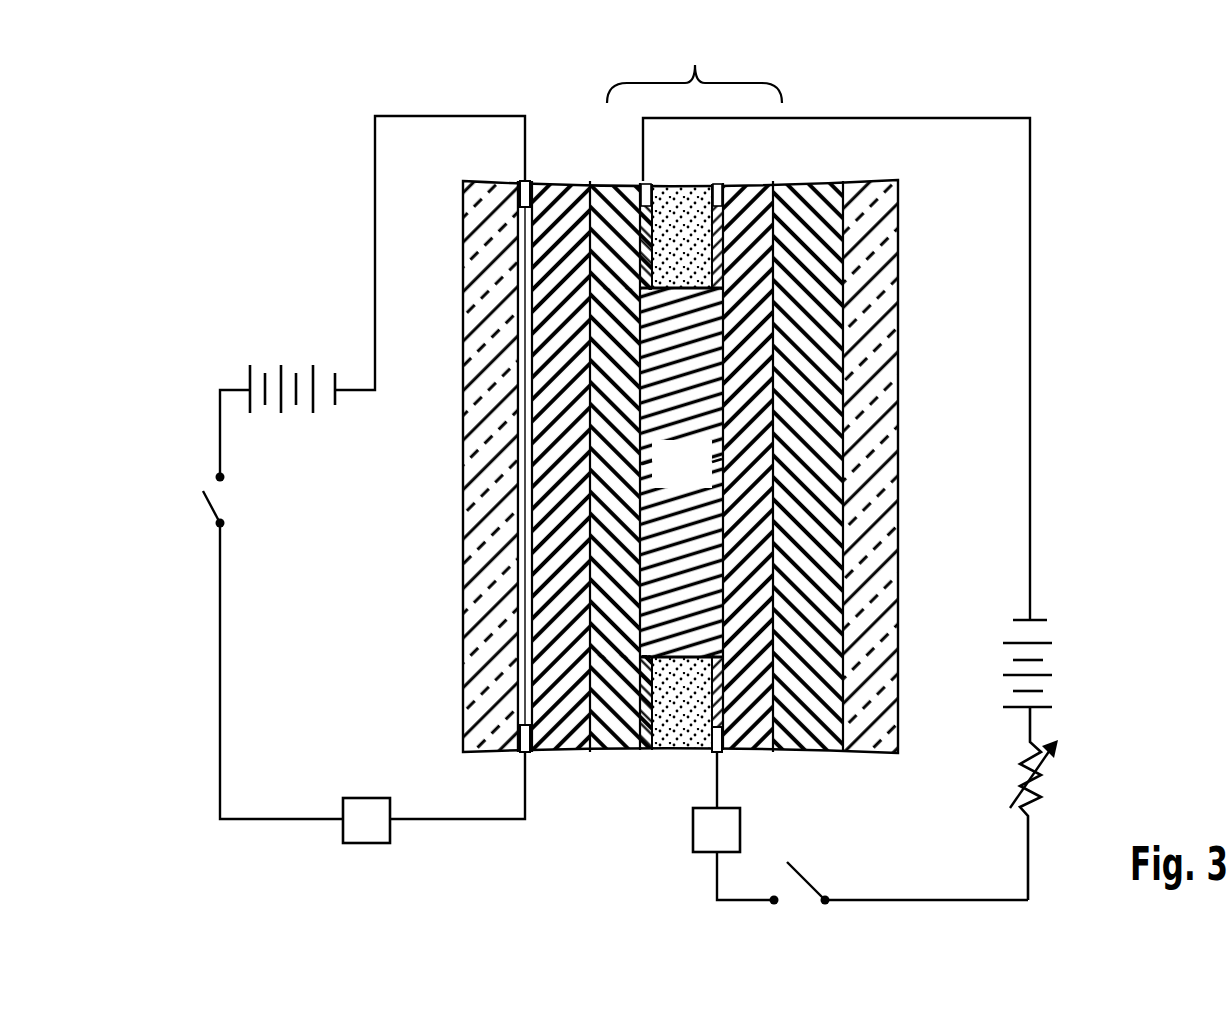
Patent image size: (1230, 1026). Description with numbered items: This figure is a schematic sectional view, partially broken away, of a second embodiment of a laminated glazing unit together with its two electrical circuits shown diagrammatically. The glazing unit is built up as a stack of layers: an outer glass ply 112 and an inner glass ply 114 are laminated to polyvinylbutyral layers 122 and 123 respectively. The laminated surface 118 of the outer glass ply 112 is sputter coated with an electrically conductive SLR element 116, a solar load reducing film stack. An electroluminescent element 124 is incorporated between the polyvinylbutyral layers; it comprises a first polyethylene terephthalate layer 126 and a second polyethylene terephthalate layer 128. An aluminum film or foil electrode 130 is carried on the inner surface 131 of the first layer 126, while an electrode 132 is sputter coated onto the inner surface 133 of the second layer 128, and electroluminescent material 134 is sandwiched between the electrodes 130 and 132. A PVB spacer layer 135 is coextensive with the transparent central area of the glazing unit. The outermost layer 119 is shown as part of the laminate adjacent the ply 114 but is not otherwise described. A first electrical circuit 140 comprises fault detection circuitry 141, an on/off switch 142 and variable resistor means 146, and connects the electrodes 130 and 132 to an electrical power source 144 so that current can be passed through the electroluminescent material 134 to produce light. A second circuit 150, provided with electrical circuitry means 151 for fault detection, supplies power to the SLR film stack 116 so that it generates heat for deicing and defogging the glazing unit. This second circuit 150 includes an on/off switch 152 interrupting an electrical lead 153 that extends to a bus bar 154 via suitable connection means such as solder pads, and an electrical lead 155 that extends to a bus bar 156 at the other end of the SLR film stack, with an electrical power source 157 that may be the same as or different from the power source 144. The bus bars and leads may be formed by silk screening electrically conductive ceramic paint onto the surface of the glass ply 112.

The outer glass ply 112 is at (485, 625).
The glass ply 114 is at (880, 440).
The SLR element 116 is at (583, 197).
The laminated surface 118 is at (525, 286).
The outer layer 119 is at (850, 200).
The polyvinylbutyral layer 122 is at (582, 200).
The polyvinylbutyral layer 123 is at (810, 190).
The electroluminescent element 124 is at (694, 67).
The first polyethylene terephthalate layer 126 is at (612, 740).
The second polyethylene terephthalate layer 128 is at (750, 740).
The electrode 130 is at (660, 735).
The inner surface 131 is at (636, 745).
The electrode 132 is at (718, 200).
The inner surface 133 is at (728, 196).
The electroluminescent material 134 is at (665, 200).
The PVB spacer layer 135 is at (704, 478).
The electrical circuit 140 is at (1040, 507).
The fault detection circuitry 141 is at (693, 832).
The on/off switch 142 is at (808, 884).
The electrical power source 144 is at (1050, 695).
The variable resistor means 146 is at (1043, 783).
The second circuit 150 is at (355, 300).
The electrical circuitry means for fault detection 151 is at (370, 798).
The on/off switch 152 is at (208, 512).
The electrical lead 153 is at (218, 682).
The bus bar 154 is at (518, 745).
The electrical lead 155 is at (372, 153).
The bus bar 156 is at (525, 183).
The electrical power source 157 is at (276, 358).